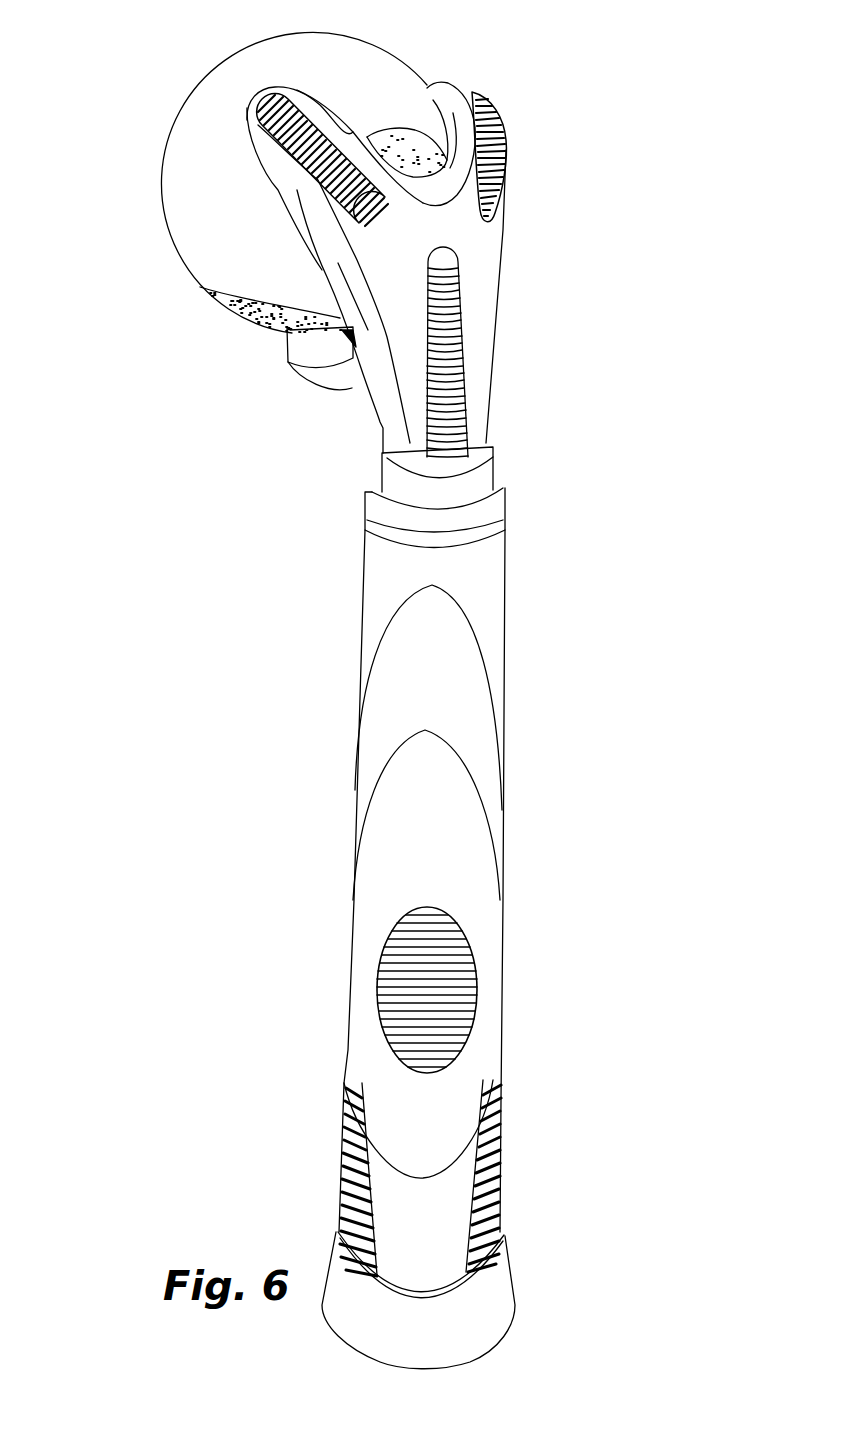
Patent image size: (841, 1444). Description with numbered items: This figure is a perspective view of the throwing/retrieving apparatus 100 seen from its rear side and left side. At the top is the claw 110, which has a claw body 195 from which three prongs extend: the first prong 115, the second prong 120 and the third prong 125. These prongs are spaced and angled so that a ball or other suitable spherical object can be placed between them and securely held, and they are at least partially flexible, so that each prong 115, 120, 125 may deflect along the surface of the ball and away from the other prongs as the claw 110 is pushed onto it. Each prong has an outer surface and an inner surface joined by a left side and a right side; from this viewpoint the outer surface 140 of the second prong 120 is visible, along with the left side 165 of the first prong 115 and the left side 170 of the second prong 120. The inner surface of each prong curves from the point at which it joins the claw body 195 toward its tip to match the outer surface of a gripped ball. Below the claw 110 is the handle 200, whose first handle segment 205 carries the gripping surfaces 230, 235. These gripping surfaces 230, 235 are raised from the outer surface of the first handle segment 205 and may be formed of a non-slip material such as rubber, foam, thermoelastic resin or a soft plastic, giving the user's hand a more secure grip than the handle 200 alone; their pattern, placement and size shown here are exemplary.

The throwing/retrieving apparatus 100 is at (537, 383).
The claw 110 is at (530, 254).
The first prong 115 is at (320, 375).
The second prong 120 is at (270, 171).
The third prong 125 is at (507, 138).
The outer surface 140 is at (267, 97).
The left side 165 is at (340, 388).
The left side 170 is at (297, 190).
The claw body 195 is at (417, 430).
The handle 200 is at (342, 1052).
The first handle segment 205 is at (367, 633).
The gripping surface 230 is at (458, 990).
The gripping surface 235 is at (500, 1187).